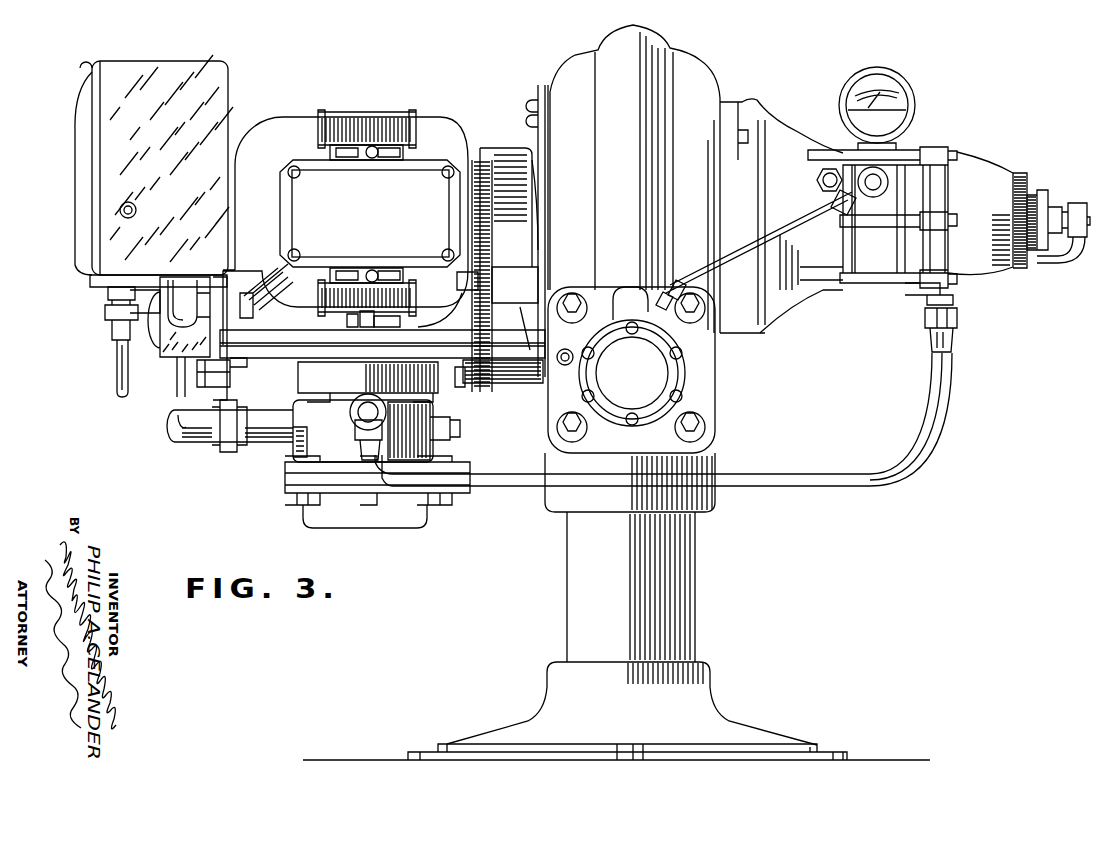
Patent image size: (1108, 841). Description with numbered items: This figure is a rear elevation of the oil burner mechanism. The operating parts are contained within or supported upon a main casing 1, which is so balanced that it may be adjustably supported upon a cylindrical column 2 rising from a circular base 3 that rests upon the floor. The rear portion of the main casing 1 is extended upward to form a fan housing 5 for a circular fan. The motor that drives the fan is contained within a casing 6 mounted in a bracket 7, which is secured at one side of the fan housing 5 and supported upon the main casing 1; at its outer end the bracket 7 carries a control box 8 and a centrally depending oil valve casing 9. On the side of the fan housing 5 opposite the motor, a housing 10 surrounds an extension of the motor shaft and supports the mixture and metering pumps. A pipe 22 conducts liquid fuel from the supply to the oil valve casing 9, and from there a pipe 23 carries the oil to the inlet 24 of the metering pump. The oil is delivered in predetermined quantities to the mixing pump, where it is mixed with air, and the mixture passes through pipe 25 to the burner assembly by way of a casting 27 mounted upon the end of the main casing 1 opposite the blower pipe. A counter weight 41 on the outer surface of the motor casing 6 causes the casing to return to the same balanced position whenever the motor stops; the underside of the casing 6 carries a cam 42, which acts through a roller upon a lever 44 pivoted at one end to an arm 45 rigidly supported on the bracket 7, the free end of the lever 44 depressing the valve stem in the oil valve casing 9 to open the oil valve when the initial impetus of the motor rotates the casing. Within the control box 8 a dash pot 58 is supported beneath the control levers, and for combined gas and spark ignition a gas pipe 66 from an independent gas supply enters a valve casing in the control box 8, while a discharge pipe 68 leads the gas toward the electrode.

The main casing 1 is at (707, 456).
The cylindrical column 2 is at (697, 608).
The circular base 3 is at (712, 722).
The fan housing 5 is at (700, 68).
The motor casing 6 is at (433, 128).
The bracket 7 is at (288, 360).
The control box 8 is at (225, 96).
The oil valve casing 9 is at (318, 442).
The pump housing 10 is at (776, 130).
The oil supply pipe 22 is at (182, 444).
The oil pipe 23 is at (497, 489).
The metering pump inlet 24 is at (957, 297).
The mixture pipe 25 is at (738, 240).
The casting 27 is at (697, 388).
The counter weight 41 is at (370, 213).
The cam 42 is at (367, 319).
The lever 44 is at (381, 322).
The arm 45 is at (353, 323).
The dash pot 58 is at (106, 309).
The gas pipe 66 is at (117, 372).
The discharge pipe 68 is at (120, 211).